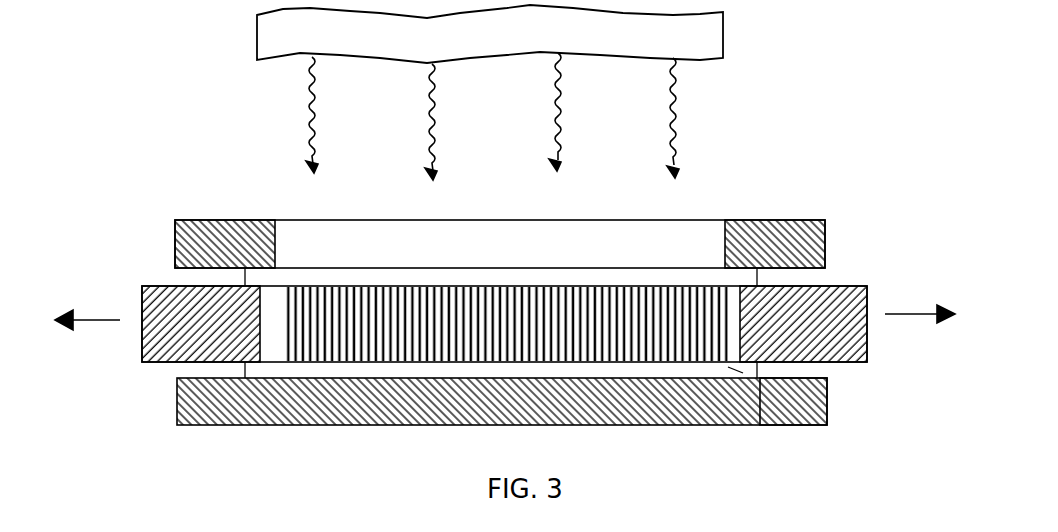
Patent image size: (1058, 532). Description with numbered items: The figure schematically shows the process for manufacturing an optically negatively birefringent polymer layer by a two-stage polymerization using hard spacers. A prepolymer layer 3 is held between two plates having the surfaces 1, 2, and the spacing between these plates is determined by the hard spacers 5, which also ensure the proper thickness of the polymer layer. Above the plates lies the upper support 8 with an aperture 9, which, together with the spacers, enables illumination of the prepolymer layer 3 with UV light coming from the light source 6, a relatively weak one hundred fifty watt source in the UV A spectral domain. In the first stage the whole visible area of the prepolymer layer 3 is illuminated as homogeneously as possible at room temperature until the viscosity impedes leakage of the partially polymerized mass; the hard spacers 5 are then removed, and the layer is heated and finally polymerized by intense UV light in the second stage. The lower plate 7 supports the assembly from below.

The surface 1 is at (732, 275).
The surface 2 is at (800, 400).
The prepolymer layer 3 is at (547, 333).
The hard spacers 5 is at (230, 313).
The light source 6 is at (723, 33).
The support plate 7 is at (530, 424).
The upper support 8 is at (185, 220).
The aperture 9 is at (342, 245).